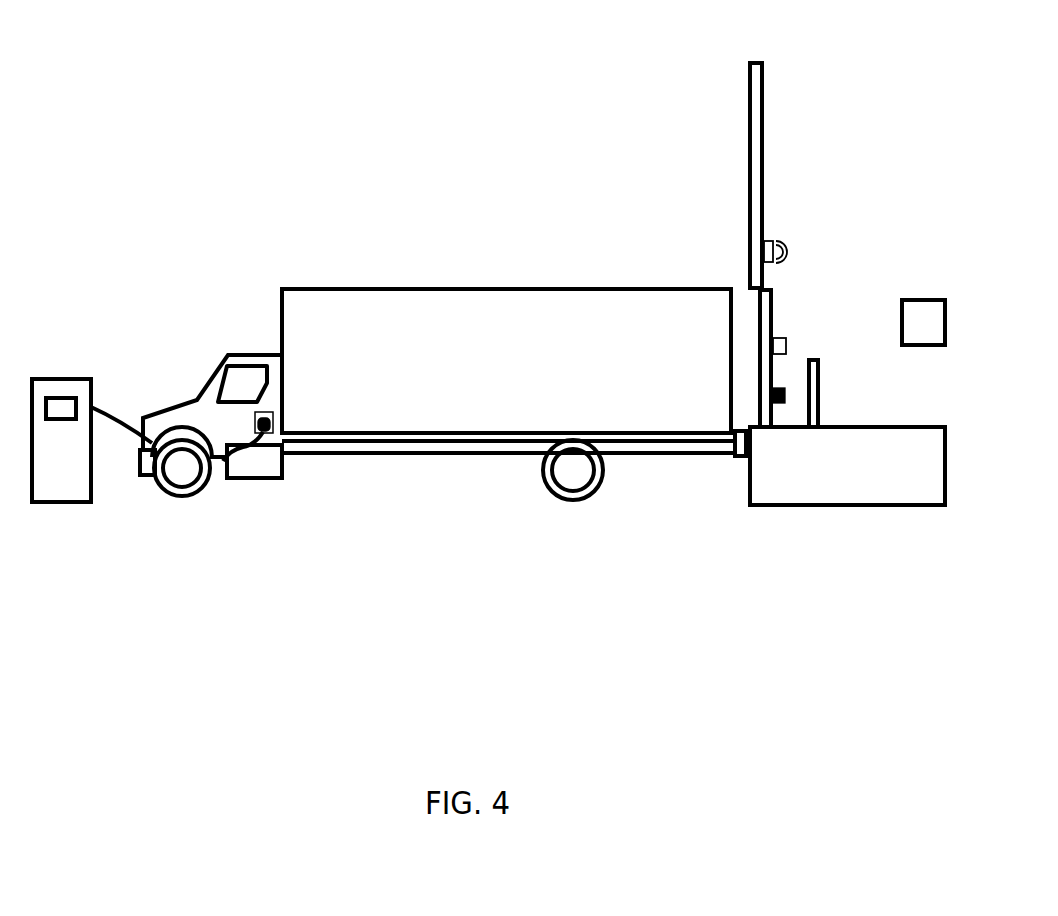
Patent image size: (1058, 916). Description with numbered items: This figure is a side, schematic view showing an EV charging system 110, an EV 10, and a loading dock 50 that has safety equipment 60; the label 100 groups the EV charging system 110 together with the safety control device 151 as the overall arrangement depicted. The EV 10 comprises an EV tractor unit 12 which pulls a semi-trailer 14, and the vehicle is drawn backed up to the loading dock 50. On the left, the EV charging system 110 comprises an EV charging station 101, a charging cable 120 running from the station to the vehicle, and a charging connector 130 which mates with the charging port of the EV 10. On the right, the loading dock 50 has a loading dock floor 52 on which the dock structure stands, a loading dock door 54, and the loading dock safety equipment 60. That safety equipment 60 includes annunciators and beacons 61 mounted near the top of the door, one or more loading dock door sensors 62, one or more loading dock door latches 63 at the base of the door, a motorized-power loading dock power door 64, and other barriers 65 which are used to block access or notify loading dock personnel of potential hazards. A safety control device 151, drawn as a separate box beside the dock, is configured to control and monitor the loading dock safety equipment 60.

The charging system 100 is at (432, 80).
The EV 10 is at (497, 182).
The EV tractor unit 12 is at (256, 355).
The semi-trailer 14 is at (560, 307).
The loading dock 50 is at (754, 47).
The loading dock floor 52 is at (892, 440).
The loading dock door 54 is at (825, 333).
The motorized-power loading dock power door 64 is at (774, 297).
The loading dock safety equipment 60 is at (864, 146).
The annunciators and beacons 61 is at (766, 240).
The loading dock door sensors 62 is at (781, 345).
The loading dock door latches 63 is at (747, 456).
The barriers 65 is at (822, 384).
The EV charging station 101 is at (39, 389).
The EV charging system 110 is at (89, 292).
The charging cable 120 is at (107, 415).
The charging connector 130 is at (262, 430).
The safety control device 151 is at (923, 312).